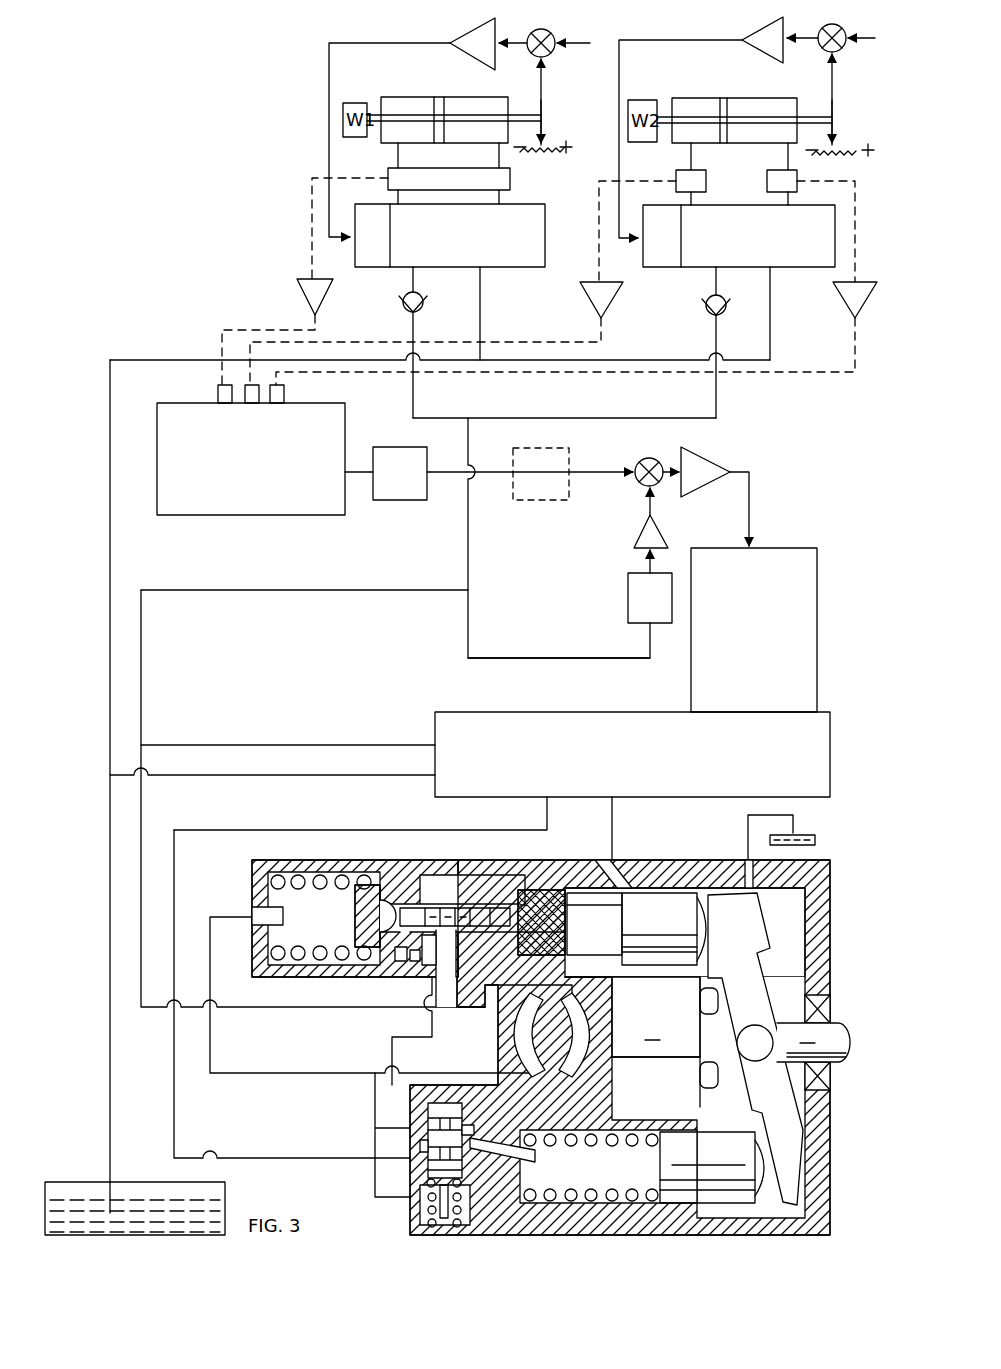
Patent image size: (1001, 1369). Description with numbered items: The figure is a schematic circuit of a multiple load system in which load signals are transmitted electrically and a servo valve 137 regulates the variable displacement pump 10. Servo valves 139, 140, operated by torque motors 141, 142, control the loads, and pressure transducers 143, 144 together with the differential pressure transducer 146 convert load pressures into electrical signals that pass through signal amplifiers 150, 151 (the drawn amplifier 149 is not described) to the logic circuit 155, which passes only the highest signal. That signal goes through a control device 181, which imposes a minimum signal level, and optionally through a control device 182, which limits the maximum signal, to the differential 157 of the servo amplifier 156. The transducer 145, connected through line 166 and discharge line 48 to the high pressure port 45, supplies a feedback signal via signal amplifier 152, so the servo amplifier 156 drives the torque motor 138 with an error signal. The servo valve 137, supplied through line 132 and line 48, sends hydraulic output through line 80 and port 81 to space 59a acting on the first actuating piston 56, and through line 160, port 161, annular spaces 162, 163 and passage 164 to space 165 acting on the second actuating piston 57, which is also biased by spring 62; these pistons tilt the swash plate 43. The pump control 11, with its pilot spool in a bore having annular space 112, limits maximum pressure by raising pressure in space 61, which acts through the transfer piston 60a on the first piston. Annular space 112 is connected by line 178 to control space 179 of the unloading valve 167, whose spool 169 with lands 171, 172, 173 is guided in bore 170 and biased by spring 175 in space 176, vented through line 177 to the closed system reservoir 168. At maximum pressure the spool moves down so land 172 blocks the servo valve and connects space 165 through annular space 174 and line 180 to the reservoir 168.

The variable displacement pump 10 is at (636, 1033).
The pump control 11 is at (383, 936).
The swash plate 43 is at (768, 1032).
The high pressure port 45 is at (584, 1037).
The discharge line 48 is at (288, 590).
The first actuating piston 56 is at (664, 929).
The second actuating piston 57 is at (712, 1167).
The space 59a is at (594, 924).
The transfer piston 60a is at (541, 922).
The space 61 is at (541, 943).
The spring 62 is at (591, 1184).
The line 80 is at (612, 815).
The port 81 is at (618, 872).
The annular space 112 is at (432, 885).
The line 132 is at (318, 745).
The servo valve 137 is at (632, 754).
The torque motor 138 is at (754, 630).
The servo valve 139 is at (450, 235).
The servo valve 140 is at (739, 236).
The torque motor 141 is at (376, 235).
The torque motor 142 is at (664, 236).
The pressure transducer 143 is at (775, 170).
The pressure transducer 144 is at (700, 170).
The pressure transducer 145 is at (650, 586).
The differential pressure transducer 146 is at (449, 179).
The amplifier 149 is at (851, 302).
The signal amplifier 150 is at (607, 304).
The signal amplifier 151 is at (322, 302).
The signal amplifier 152 is at (640, 536).
The logic circuit 155 is at (251, 450).
The servo amplifier 156 is at (702, 460).
The differential 157 is at (651, 458).
The line 160 is at (547, 818).
The port 161 is at (404, 1172).
The annular space 162 is at (466, 1175).
The annular space 163 is at (420, 1147).
The passage 164 is at (540, 1157).
The space 165 is at (591, 1152).
The line 166 is at (554, 662).
The unloading valve 167 is at (462, 1108).
The system reservoir 168 is at (225, 1185).
The spool 169 is at (448, 1103).
The bore 170 is at (474, 1130).
The land 171 is at (464, 1112).
The land 172 is at (462, 1160).
The land 173 is at (468, 1188).
The annular space 174 is at (462, 1122).
The spring 175 is at (428, 1203).
The space 176 is at (470, 1208).
The line 177 is at (375, 1185).
The line 178 is at (392, 1048).
The control space 179 is at (432, 1103).
The line 180 is at (395, 1127).
The control device 181 is at (398, 500).
The control device 182 is at (540, 490).